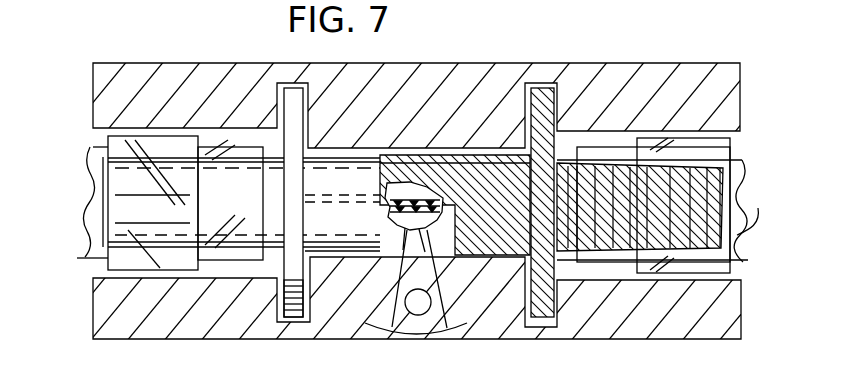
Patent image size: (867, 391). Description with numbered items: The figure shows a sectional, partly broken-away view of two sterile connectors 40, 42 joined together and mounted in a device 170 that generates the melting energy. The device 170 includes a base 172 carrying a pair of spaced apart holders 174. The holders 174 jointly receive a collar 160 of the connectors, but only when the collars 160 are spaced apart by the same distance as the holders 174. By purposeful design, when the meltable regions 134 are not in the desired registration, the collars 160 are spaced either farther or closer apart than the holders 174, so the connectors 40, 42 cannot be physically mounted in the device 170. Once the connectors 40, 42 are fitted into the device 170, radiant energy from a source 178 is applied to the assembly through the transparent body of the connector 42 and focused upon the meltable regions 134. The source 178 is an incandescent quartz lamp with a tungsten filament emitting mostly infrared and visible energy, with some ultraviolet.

The connector 40 is at (459, 122).
The connector 42 is at (56, 157).
The meltable region 134 is at (428, 184).
The collar 160 is at (283, 291).
The device 170 is at (190, 318).
The base 172 is at (470, 76).
The holder 174 is at (311, 287).
The source 178 is at (421, 313).